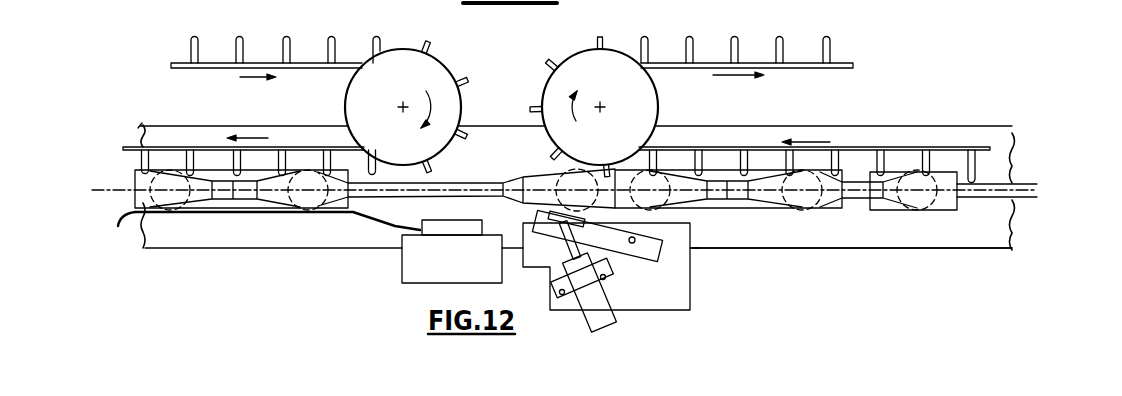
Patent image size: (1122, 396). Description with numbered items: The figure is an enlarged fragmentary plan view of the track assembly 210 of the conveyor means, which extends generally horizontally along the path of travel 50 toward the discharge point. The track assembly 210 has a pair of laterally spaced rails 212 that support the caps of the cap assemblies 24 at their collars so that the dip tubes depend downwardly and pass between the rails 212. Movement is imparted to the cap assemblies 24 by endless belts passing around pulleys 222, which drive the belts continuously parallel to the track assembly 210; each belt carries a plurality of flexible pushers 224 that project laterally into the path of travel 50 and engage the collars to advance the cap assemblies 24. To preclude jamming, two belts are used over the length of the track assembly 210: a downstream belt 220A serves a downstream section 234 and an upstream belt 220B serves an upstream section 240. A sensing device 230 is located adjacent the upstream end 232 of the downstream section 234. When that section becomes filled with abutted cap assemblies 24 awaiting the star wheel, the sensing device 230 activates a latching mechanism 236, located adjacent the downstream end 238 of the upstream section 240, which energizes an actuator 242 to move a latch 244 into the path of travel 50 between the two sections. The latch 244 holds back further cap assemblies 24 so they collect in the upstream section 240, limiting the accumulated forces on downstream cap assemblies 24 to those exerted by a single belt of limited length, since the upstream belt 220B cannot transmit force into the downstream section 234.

The track assembly 210 is at (1013, 132).
The rails 212 is at (900, 130).
The downstream belt 220A is at (230, 19).
The upstream belt 220B is at (841, 63).
The pulleys 222 is at (398, 66).
The pushers 224 is at (329, 47).
The upstream end 232 is at (473, 128).
The downstream end 238 is at (517, 140).
The path of travel 50 is at (443, 186).
The cap assemblies 24 is at (135, 190).
The downstream section 234 is at (206, 236).
The sensing device 230 is at (420, 264).
The latching mechanism 236 is at (692, 293).
The latch 244 is at (538, 218).
The actuator 242 is at (594, 312).
The upstream section 240 is at (776, 237).